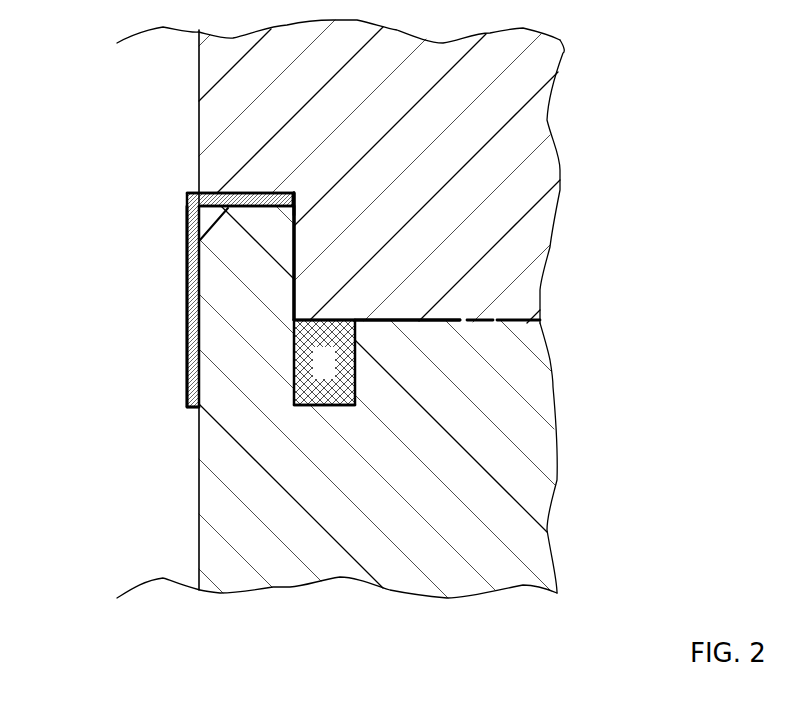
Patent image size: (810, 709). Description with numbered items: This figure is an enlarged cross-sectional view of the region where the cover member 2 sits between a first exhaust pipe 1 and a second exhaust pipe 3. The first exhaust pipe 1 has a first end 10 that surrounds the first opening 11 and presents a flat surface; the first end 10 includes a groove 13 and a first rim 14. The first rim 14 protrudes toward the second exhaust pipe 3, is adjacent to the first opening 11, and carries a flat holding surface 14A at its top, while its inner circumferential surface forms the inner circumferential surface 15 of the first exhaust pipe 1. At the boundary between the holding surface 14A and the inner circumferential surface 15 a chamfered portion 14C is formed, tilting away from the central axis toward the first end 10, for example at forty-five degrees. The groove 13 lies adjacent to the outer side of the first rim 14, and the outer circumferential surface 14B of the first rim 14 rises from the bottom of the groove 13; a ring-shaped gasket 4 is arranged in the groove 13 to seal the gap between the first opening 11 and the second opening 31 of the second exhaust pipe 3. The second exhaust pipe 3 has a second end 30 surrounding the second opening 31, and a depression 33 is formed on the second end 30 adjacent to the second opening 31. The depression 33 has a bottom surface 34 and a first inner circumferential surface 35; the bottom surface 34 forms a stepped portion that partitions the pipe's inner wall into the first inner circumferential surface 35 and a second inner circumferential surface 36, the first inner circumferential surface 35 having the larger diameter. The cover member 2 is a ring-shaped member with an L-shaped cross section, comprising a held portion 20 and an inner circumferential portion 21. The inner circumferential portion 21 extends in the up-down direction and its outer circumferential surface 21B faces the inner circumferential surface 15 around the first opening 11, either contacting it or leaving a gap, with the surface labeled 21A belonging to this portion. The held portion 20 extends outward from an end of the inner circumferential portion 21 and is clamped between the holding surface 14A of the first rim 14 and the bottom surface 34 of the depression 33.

The first exhaust pipe 1 is at (578, 500).
The cover member 2 is at (172, 268).
The second exhaust pipe 3 is at (577, 144).
The gasket 4 is at (332, 375).
The first end 10 is at (498, 322).
The first opening 11 is at (55, 273).
The groove 13 is at (335, 405).
The first rim 14 is at (261, 289).
The holding surface 14A is at (282, 195).
The outer circumferential surface 14B is at (295, 290).
The chamfered portion 14C is at (187, 215).
The inner circumferential surface 15 is at (199, 463).
The held portion 20 is at (228, 193).
The inner circumferential portion 21 is at (188, 292).
The outer surface of vertical portion 21A is at (188, 330).
The outer circumferential surface 21B is at (195, 373).
The second end 30 is at (465, 322).
The second opening 31 is at (53, 193).
The depression 33 is at (277, 170).
The bottom surface 34 is at (253, 193).
The first inner circumferential surface 35 is at (295, 232).
The second inner circumferential surface 36 is at (199, 70).